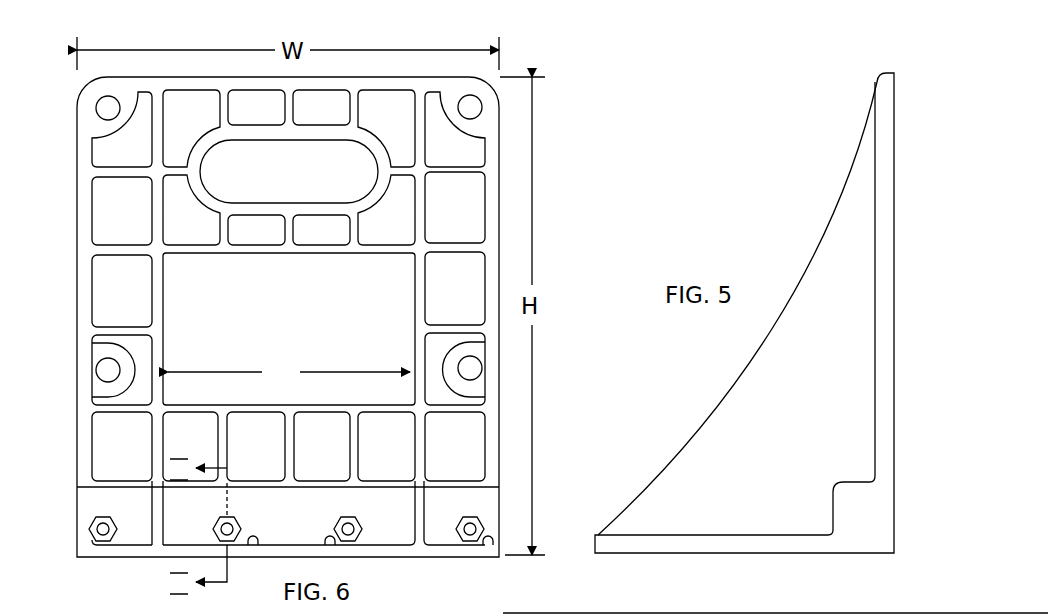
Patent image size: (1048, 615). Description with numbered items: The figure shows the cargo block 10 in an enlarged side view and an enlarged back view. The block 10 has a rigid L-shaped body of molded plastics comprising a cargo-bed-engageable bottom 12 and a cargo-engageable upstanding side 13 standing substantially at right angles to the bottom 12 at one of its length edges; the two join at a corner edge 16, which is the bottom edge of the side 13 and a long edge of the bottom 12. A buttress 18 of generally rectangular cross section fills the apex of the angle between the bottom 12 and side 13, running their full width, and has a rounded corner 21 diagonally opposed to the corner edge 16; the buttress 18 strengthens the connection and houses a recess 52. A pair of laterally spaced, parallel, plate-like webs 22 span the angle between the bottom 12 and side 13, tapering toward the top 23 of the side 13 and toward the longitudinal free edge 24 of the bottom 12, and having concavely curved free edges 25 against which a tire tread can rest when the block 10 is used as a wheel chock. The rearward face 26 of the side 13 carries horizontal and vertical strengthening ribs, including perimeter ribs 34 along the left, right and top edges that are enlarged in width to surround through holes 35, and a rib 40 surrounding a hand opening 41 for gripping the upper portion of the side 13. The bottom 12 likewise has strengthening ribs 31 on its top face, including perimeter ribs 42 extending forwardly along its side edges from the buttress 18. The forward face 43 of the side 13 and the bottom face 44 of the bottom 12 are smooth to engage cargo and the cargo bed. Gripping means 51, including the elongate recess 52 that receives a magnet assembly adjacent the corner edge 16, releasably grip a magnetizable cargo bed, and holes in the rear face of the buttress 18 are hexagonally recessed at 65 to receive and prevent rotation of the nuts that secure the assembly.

In FIG. 6, the block 10 is at (508, 71).
In FIG. 5, the block 10 is at (806, 214).
In FIG. 6, the bottom 12 is at (117, 560).
In FIG. 5, the bottom 12 is at (652, 556).
In FIG. 5, the side 13 is at (888, 153).
In FIG. 5, the corner edge 16 is at (898, 556).
In FIG. 6, the buttress 18 is at (328, 478).
In FIG. 5, the buttress 18 is at (860, 477).
In FIG. 5, the rounded corner 21 is at (842, 483).
In FIG. 6, the webs 22 is at (163, 306).
In FIG. 5, the webs 22 is at (741, 376).
In FIG. 6, the top 23 is at (362, 77).
In FIG. 5, the top 23 is at (883, 72).
In FIG. 6, the longitudinal free edge 24 is at (178, 548).
In FIG. 5, the longitudinal free edge 24 is at (594, 550).
In FIG. 6, the concavely curved free edges 25 is at (345, 228).
In FIG. 5, the concavely curved free edges 25 is at (703, 425).
In FIG. 6, the rearward face 26 is at (289, 329).
In FIG. 5, the rearward face 26 is at (875, 324).
In FIG. 6, the strengthening ribs 31 is at (262, 548).
In FIG. 6, the perimeter ribs 34 is at (85, 157).
In FIG. 6, the through holes 35 is at (103, 107).
In FIG. 6, the rib 40 is at (250, 130).
In FIG. 6, the hand opening 41 is at (345, 130).
In FIG. 6, the perimeter ribs 42 is at (87, 530).
In FIG. 5, the forward face 43 is at (896, 200).
In FIG. 5, the bottom face 44 is at (732, 556).
In FIG. 6, the gripping means 51 is at (489, 613).
In FIG. 6, the recess 52 is at (580, 613).
In FIG. 6, the hexagonal recesses 65 is at (352, 525).